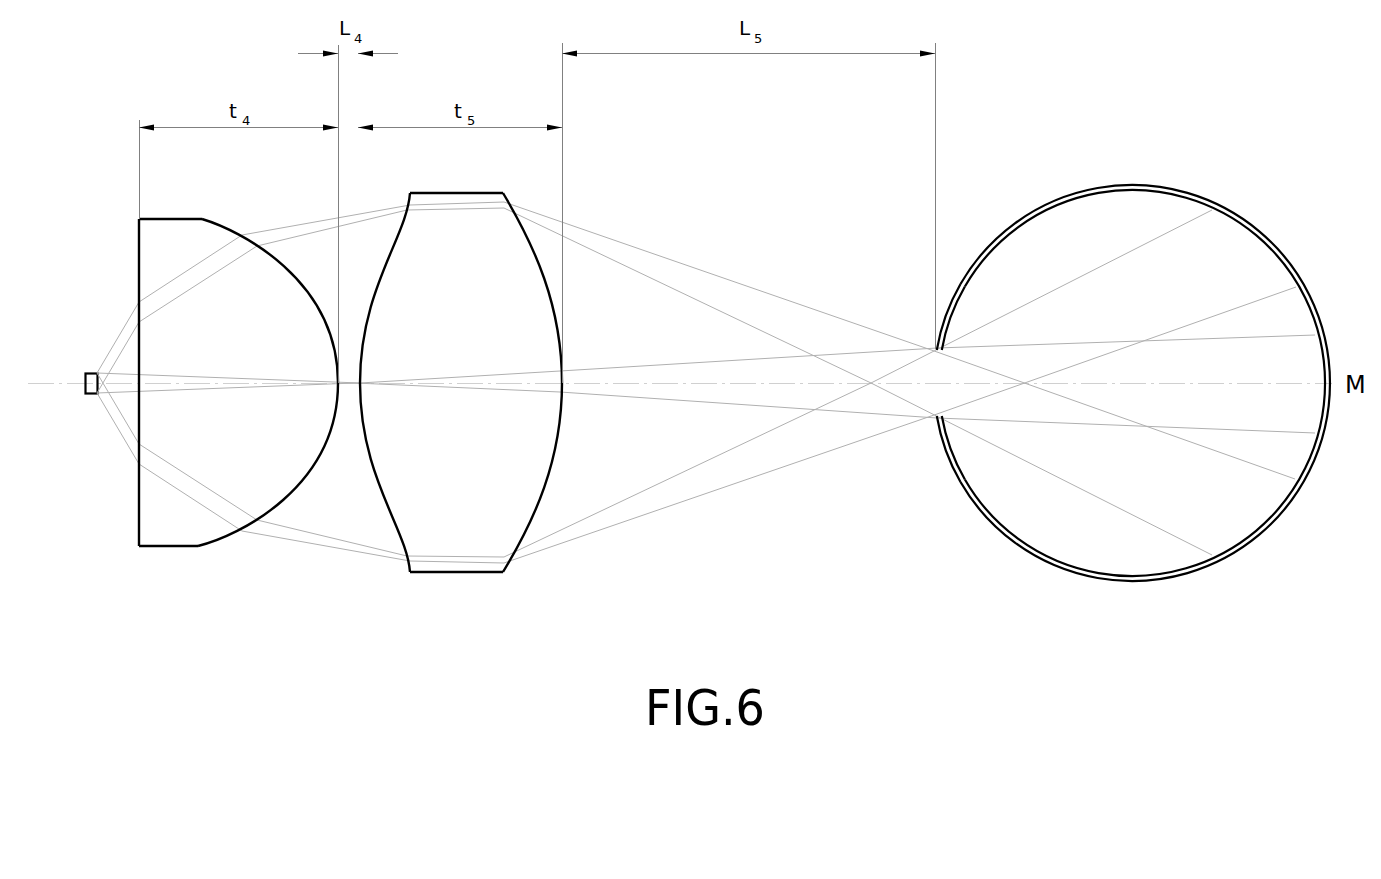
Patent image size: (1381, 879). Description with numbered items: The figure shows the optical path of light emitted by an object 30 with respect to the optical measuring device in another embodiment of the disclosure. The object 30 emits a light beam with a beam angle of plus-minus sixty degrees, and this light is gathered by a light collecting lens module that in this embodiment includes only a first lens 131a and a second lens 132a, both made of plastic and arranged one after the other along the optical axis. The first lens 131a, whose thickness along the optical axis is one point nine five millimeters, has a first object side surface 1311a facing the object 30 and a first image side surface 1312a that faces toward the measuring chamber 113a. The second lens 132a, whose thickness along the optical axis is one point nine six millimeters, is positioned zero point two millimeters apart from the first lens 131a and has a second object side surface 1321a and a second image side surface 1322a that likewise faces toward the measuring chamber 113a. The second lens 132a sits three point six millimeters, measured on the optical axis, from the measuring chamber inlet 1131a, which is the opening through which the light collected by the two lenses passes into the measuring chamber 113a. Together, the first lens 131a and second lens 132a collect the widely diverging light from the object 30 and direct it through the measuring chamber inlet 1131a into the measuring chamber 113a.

The object 30 is at (88, 395).
The first lens 131a is at (215, 427).
The first object side surface 1311a is at (137, 528).
The first image side surface 1312a is at (268, 417).
The second lens 132a is at (461, 427).
The second object side surface 1321a is at (405, 562).
The second image side surface 1322a is at (508, 567).
The measuring chamber 113a is at (1078, 403).
The measuring chamber inlet 1131a is at (937, 417).